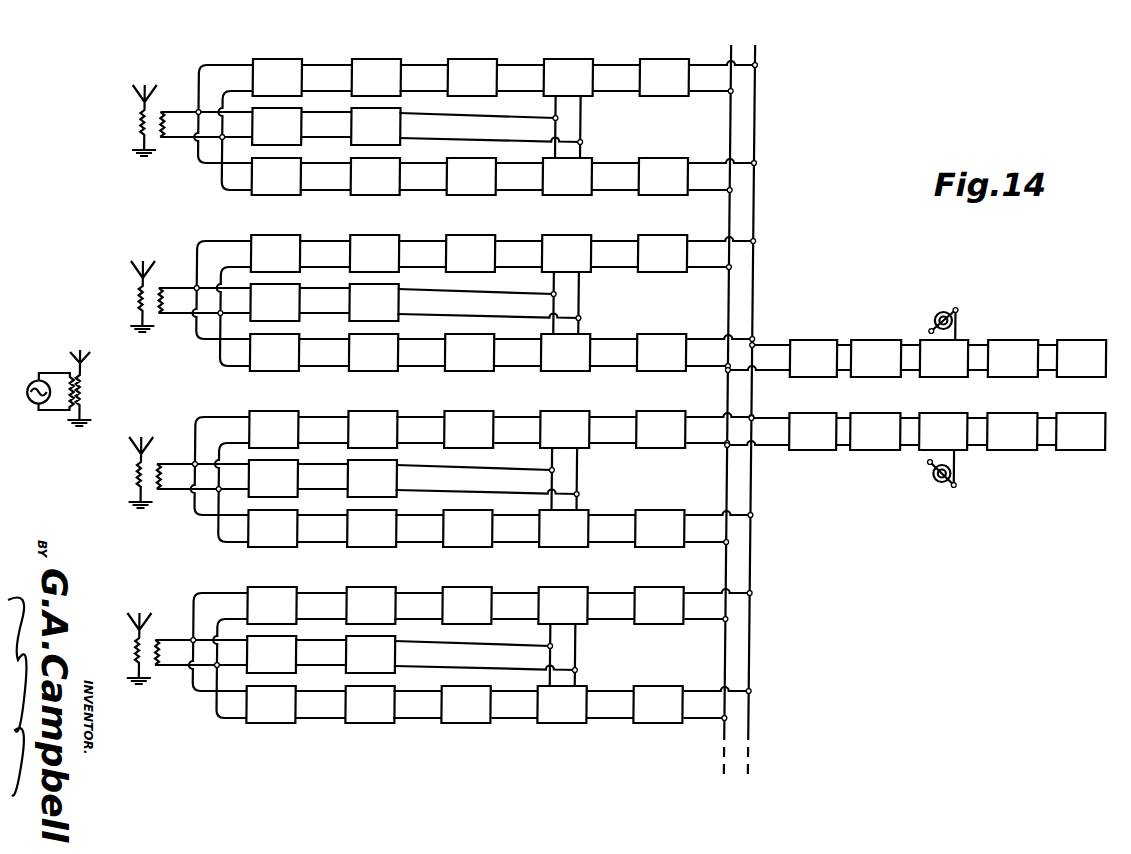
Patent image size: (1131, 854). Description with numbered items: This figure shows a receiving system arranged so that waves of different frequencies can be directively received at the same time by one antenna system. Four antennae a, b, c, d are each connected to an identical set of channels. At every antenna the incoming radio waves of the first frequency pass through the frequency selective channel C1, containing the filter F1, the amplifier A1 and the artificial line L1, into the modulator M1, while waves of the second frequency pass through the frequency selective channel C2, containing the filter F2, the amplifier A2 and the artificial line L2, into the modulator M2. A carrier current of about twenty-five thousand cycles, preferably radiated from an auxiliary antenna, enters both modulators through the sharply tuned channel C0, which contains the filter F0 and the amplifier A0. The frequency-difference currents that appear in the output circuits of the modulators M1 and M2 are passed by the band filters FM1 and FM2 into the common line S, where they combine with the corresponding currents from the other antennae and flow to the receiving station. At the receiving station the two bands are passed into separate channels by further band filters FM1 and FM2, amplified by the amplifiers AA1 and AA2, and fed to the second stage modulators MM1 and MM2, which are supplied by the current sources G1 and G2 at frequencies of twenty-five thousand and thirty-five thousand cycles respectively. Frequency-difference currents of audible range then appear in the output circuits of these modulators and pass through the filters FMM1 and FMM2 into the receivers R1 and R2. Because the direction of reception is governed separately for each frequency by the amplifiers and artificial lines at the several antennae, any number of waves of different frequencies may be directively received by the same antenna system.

The antenna a is at (181, 127).
The antenna b is at (179, 303).
The antenna c is at (176, 479).
The antenna d is at (174, 655).
The frequency selective filter F1 is at (274, 341).
The sharply tuned filter F0 is at (274, 390).
The frequency selective filter F2 is at (273, 440).
The amplifier A1 is at (373, 341).
The amplifier A0 is at (373, 390).
The amplifier A2 is at (372, 440).
The artificial line L1 is at (469, 341).
The artificial line L2 is at (468, 440).
The modulator M1 is at (565, 341).
The modulator M2 is at (564, 440).
The band filter FM1 is at (737, 341).
The band filter FM2 is at (736, 440).
The amplifier AA1 is at (876, 358).
The amplifier AA2 is at (875, 431).
The second stage modulator MM1 is at (944, 358).
The second stage modulator MM2 is at (943, 431).
The filter FMM1 is at (1013, 358).
The filter FMM2 is at (1012, 431).
The receiver R1 is at (1081, 358).
The receiver R2 is at (1080, 431).
The source of current G1 is at (966, 320).
The source of current G2 is at (959, 481).
The line S is at (765, 575).
The frequency selective channel C1 is at (426, 596).
The sharply tuned channel C0 is at (414, 660).
The frequency selective channel C2 is at (415, 732).